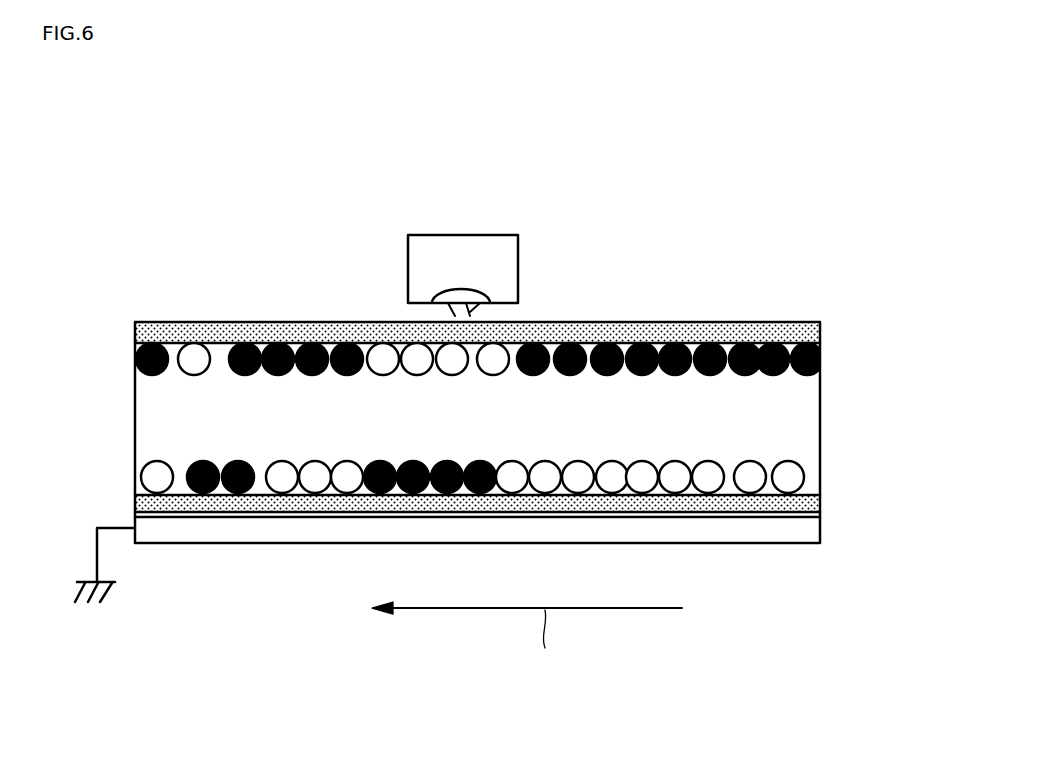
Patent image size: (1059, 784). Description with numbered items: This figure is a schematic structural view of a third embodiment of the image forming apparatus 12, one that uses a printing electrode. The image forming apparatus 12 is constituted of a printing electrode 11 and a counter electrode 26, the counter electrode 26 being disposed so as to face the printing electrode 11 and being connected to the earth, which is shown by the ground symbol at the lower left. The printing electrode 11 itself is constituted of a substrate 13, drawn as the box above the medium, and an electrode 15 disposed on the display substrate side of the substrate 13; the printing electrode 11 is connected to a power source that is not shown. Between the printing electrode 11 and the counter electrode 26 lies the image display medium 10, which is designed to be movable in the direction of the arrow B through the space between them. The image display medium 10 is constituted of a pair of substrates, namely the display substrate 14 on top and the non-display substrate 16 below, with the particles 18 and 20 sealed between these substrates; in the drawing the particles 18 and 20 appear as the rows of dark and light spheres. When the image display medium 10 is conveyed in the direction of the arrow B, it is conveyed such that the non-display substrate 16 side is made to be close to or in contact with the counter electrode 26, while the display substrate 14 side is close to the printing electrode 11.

The image display medium 10 is at (708, 287).
The printing electrode 11 is at (460, 218).
The image forming apparatus 12 is at (615, 167).
The substrate 13 is at (518, 267).
The display substrate 14 is at (792, 328).
The electrode 15 is at (440, 317).
The non-display substrate 16 is at (807, 505).
The particles 18 is at (810, 373).
The particles 20 is at (788, 465).
The counter electrode 26 is at (772, 528).